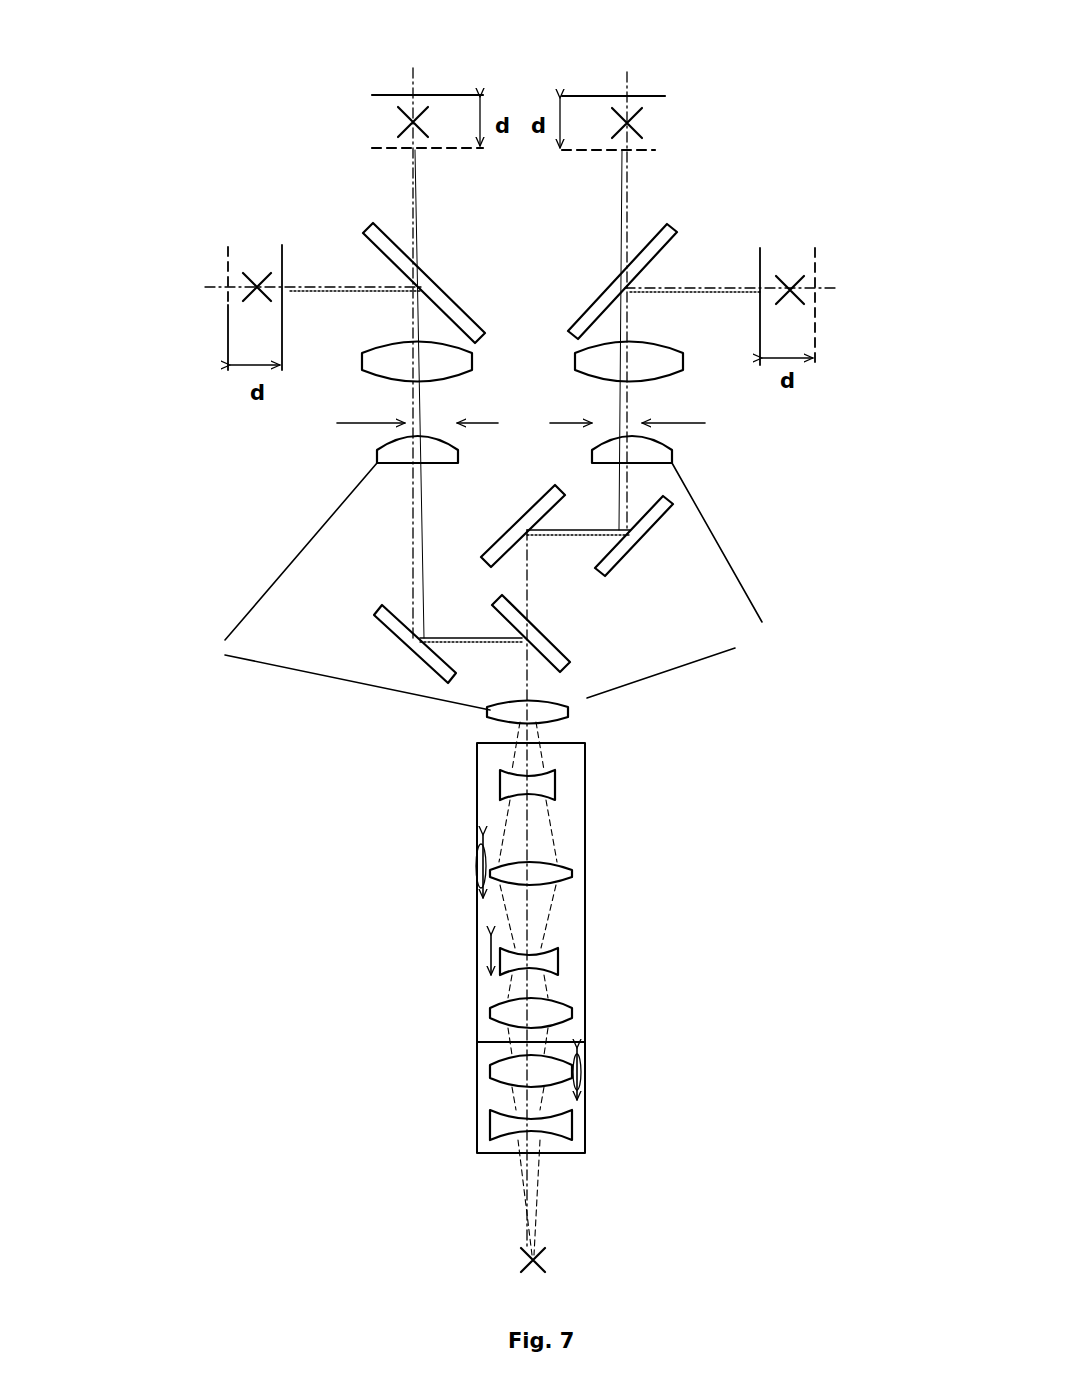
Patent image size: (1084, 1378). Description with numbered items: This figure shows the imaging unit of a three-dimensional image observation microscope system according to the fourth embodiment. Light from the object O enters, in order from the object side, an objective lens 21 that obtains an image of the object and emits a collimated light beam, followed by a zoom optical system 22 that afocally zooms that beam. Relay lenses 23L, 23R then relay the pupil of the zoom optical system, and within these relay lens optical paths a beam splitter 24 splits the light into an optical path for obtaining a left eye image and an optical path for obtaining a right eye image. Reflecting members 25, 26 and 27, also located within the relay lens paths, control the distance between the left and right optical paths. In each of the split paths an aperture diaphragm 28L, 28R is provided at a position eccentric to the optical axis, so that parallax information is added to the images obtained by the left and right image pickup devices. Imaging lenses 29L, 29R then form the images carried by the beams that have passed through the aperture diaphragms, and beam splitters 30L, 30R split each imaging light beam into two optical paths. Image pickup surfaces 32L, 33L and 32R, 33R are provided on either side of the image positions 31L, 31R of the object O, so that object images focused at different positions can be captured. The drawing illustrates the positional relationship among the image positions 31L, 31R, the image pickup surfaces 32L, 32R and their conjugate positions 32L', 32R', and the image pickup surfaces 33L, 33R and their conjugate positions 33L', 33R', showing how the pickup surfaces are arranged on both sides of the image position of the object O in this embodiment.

The objective lens 21 is at (493, 1100).
The zoom optical system 22 is at (488, 925).
The left relay lens 23L is at (333, 586).
The right relay lens 23R is at (688, 580).
The beam splitter 24 is at (553, 652).
The reflecting member 25 is at (382, 610).
The reflecting member 26 is at (520, 522).
The reflecting member 27 is at (643, 540).
The left aperture diaphragm 28L is at (357, 425).
The right aperture diaphragm 28R is at (700, 425).
The left imaging lens 29L is at (465, 370).
The right imaging lens 29R is at (668, 378).
The left beam splitter 30L is at (437, 292).
The right beam splitter 30R is at (595, 312).
The left image position 31L is at (403, 120).
The right image position 31R is at (795, 280).
The left image pickup surface 32L is at (383, 64).
The right image pickup surface 32R is at (621, 68).
The conjugate position of left image pickup surface 32L' is at (158, 308).
The conjugate position of right image pickup surface 32R' is at (864, 306).
The left image pickup surface 33L is at (306, 287).
The right image pickup surface 33R is at (732, 292).
The conjugate position of left image pickup surface 33L' is at (394, 135).
The conjugate position of right image pickup surface 33R' is at (648, 174).
The object O is at (522, 1262).